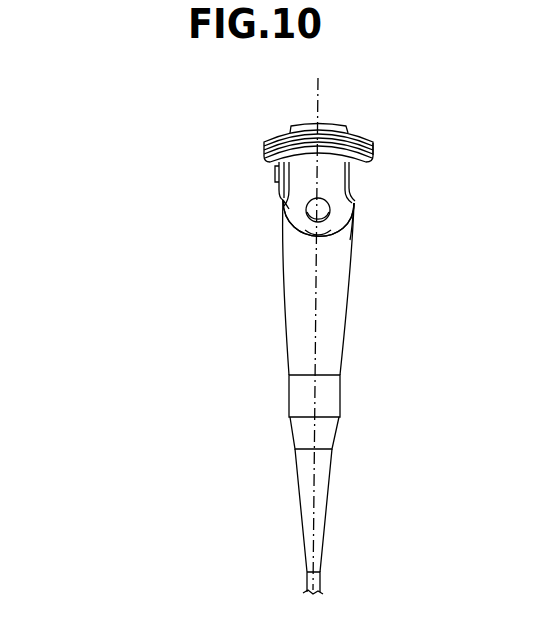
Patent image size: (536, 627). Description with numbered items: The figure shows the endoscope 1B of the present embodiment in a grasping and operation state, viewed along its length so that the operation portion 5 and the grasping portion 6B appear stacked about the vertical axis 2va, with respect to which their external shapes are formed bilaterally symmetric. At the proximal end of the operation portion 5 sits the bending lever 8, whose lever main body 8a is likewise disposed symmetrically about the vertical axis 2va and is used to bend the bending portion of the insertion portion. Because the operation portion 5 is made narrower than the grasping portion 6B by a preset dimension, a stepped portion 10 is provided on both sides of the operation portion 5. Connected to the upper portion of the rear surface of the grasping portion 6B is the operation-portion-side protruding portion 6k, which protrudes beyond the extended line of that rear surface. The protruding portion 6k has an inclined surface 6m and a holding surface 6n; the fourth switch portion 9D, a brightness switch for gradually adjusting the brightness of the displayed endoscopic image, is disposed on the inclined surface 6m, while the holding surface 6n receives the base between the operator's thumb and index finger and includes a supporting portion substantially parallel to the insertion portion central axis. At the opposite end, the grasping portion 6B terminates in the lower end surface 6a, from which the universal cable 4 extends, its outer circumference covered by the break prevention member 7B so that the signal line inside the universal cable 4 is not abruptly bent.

The endoscope 1B is at (239, 396).
The vertical axis 2va is at (319, 106).
The universal cable 4 is at (307, 587).
The operation portion 5 is at (308, 173).
The grasping portion 6B is at (292, 250).
The lower end surface 6a is at (305, 378).
The operation-portion-side protruding portion 6k is at (412, 208).
The inclined surface 6m is at (348, 212).
The holding surface 6n is at (321, 248).
The break prevention member 7B is at (287, 455).
The bending lever 8 is at (258, 128).
The lever main body 8a is at (372, 148).
The fourth switch portion 9D is at (290, 208).
The stepped portion 10 is at (352, 193).